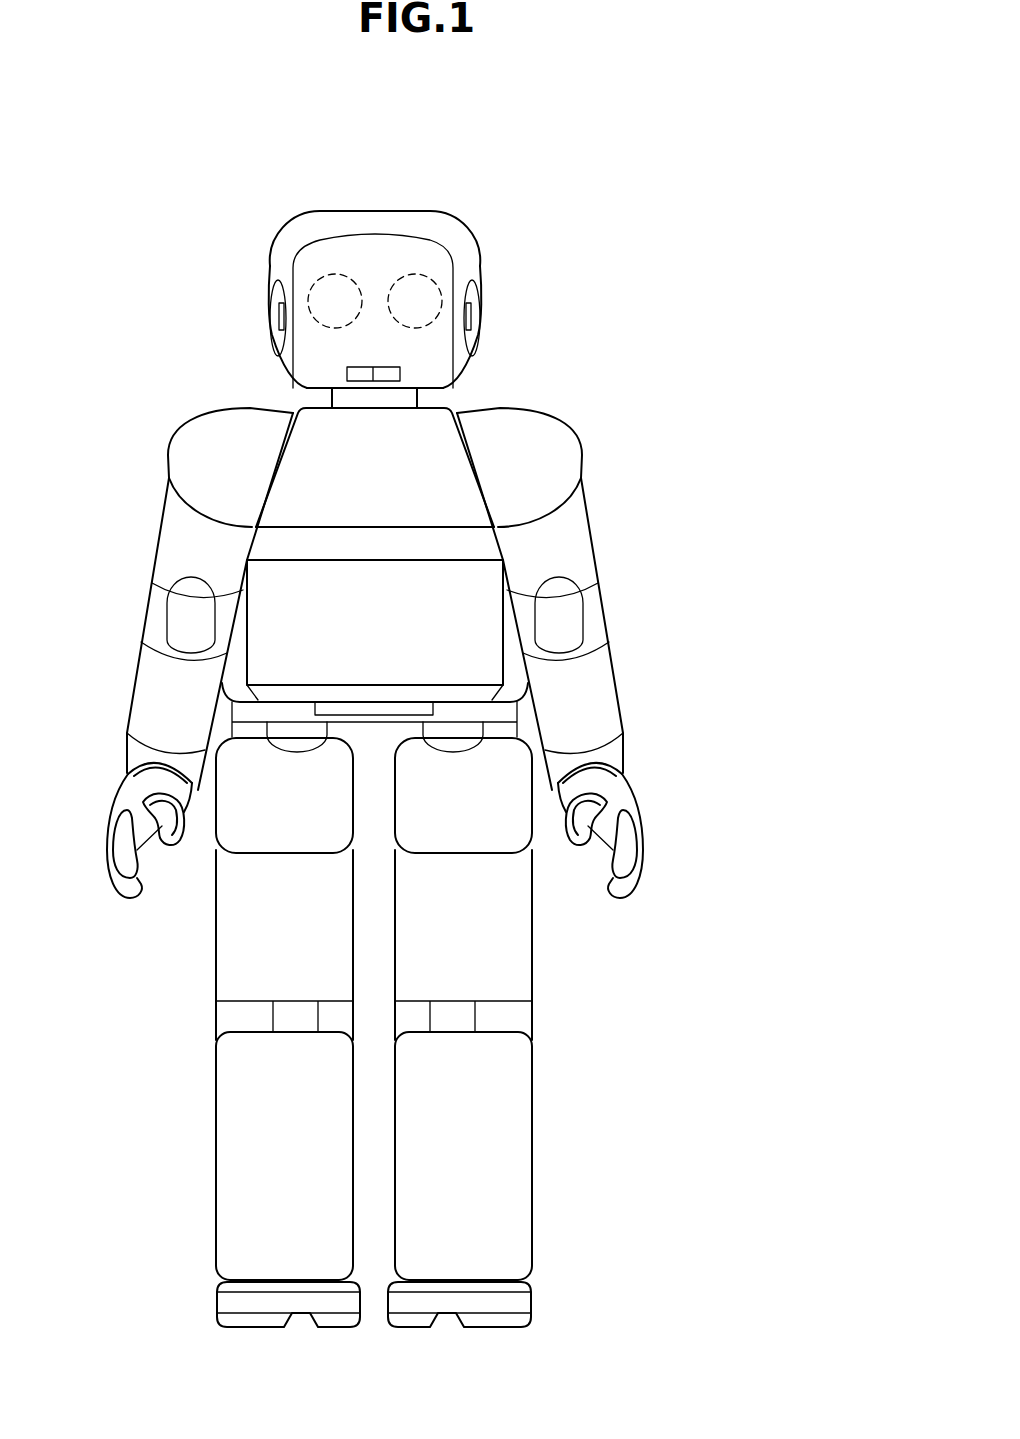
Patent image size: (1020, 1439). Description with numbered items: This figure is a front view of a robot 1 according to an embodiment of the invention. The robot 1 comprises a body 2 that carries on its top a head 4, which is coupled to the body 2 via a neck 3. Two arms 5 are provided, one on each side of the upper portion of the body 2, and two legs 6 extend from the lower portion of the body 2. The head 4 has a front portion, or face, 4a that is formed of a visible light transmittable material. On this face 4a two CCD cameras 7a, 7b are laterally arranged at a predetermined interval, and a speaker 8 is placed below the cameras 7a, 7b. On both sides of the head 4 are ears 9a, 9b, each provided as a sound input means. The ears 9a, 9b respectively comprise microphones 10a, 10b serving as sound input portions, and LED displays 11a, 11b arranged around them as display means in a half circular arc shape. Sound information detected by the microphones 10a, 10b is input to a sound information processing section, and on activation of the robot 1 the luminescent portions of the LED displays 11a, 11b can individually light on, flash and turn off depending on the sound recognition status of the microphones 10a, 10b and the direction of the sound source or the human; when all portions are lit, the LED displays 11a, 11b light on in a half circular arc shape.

The robot 1 is at (658, 197).
The body 2 is at (470, 592).
The neck 3 is at (397, 400).
The head 4 is at (428, 220).
The front portion (face) 4a is at (376, 243).
The arm 5 is at (150, 692).
The leg 6 is at (258, 1147).
The CCD camera 7a is at (427, 273).
The CCD camera 7b is at (330, 273).
The speaker 8 is at (400, 372).
The ear 9a is at (493, 303).
The ear 9b is at (260, 307).
The microphone 10a is at (480, 320).
The microphone 10b is at (267, 320).
The LED display 11a is at (473, 282).
The LED display 11b is at (277, 284).